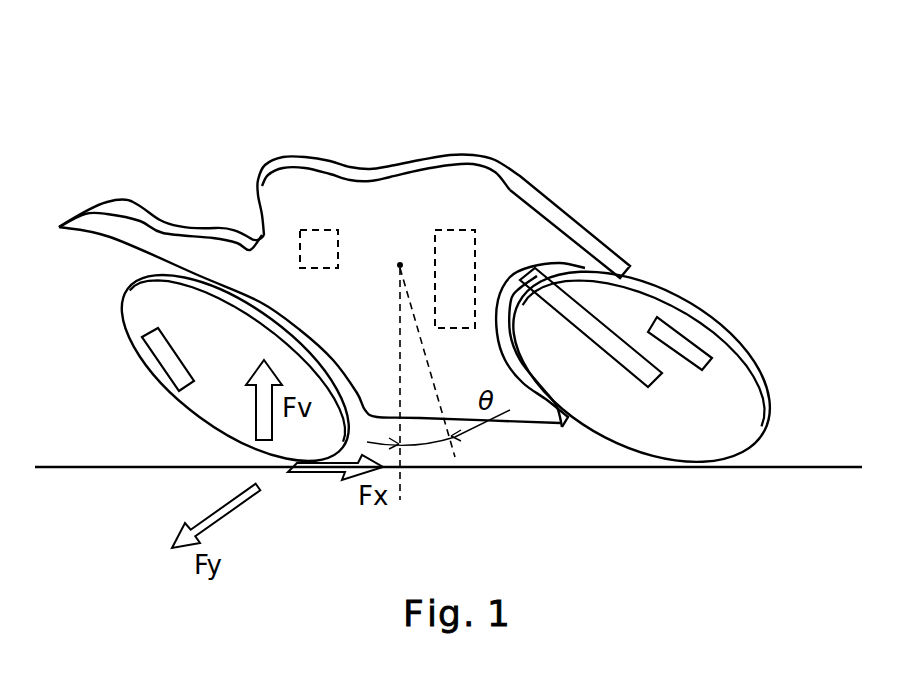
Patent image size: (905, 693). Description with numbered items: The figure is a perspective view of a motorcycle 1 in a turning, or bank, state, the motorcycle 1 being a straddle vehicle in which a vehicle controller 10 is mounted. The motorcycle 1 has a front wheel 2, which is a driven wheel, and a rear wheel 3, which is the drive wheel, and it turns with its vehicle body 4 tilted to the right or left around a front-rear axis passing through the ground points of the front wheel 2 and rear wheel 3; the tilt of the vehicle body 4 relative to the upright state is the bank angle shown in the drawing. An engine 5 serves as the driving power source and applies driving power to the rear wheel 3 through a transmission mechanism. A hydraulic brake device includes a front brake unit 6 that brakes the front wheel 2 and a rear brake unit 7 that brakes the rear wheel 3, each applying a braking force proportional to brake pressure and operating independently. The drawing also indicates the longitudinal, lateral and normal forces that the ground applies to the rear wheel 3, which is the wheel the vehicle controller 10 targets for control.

The motorcycle 1 is at (549, 104).
The front wheel 2 is at (724, 329).
The rear wheel 3 is at (122, 310).
The vehicle body 4 is at (370, 168).
The engine 5 is at (447, 228).
The front brake unit 6 is at (685, 338).
The rear brake unit 7 is at (160, 352).
The vehicle controller 10 is at (318, 228).